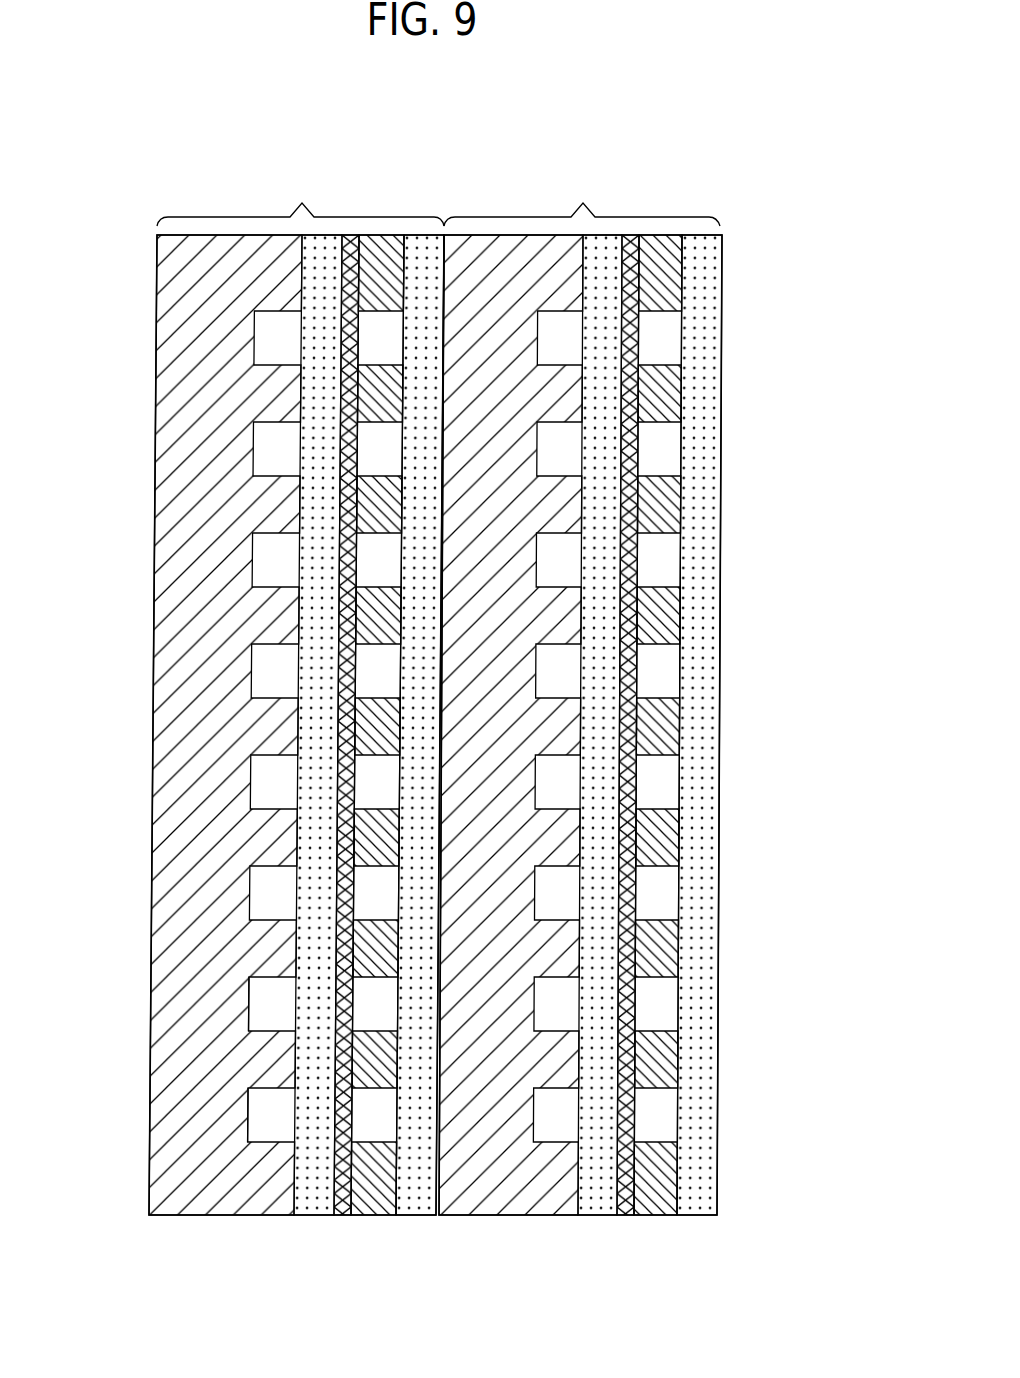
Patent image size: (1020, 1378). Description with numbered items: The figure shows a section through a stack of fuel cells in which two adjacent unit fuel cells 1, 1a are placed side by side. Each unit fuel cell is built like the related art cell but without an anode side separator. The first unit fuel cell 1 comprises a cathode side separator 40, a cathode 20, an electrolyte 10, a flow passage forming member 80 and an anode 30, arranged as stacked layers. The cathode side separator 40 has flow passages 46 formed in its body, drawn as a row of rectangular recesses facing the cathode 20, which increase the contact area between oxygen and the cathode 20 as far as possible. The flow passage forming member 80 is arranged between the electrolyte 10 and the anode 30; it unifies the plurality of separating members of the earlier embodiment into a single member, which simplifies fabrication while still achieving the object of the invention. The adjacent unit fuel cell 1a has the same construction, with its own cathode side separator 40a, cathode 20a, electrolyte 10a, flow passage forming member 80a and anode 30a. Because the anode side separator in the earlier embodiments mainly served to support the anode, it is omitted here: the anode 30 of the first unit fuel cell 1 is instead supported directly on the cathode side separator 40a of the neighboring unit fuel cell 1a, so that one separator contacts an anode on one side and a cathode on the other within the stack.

The unit fuel cell 1 is at (279, 745).
The unit fuel cell 1a is at (628, 755).
The electrolyte 10 is at (347, 1217).
The electrolyte 10a is at (627, 1216).
The cathode 20 is at (307, 1216).
The cathode 20a is at (593, 1216).
The anode 30 is at (420, 1196).
The anode 30a is at (690, 1100).
The cathode side separator 40 is at (156, 886).
The cathode side separator 40a is at (498, 1194).
The flow passages 46 is at (263, 1108).
The flow passage forming member 80 is at (378, 1198).
The flow passage forming member 80a is at (655, 1198).